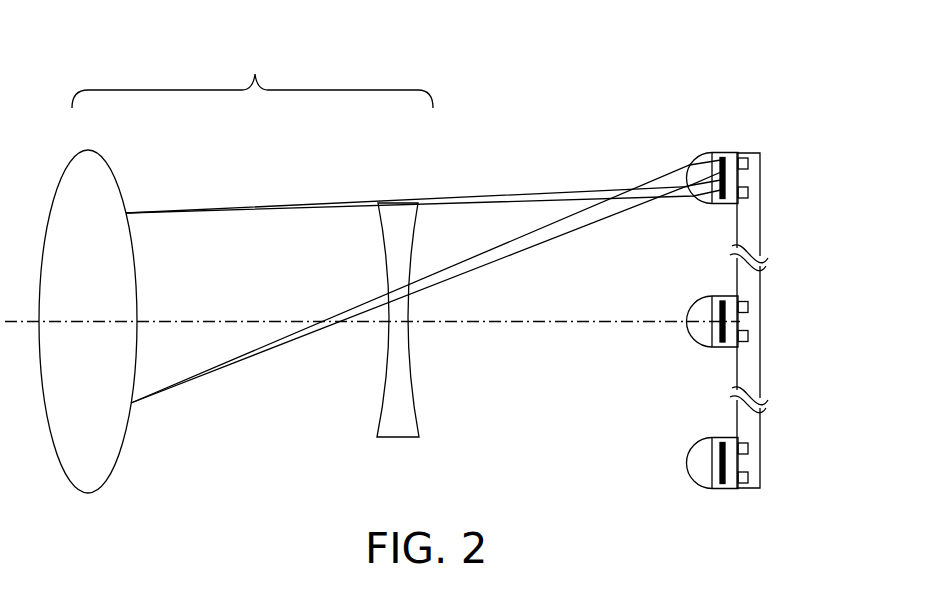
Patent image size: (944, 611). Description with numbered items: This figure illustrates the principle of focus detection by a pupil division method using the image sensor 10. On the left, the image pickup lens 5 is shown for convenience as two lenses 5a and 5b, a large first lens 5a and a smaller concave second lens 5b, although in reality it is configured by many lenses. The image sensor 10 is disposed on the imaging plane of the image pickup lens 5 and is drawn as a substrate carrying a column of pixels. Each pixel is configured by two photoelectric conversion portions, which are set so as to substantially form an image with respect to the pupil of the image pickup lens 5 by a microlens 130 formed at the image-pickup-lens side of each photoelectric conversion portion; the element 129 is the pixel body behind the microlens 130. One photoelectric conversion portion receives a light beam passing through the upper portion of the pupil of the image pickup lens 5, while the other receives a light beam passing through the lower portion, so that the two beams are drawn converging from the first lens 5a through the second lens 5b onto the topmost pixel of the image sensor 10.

The image pickup lens 5 is at (252, 75).
The lens 5a is at (113, 173).
The lens 5b is at (394, 203).
The image sensor 10 is at (767, 452).
The light emitting element body 129 is at (723, 153).
The microlens 130 is at (690, 163).